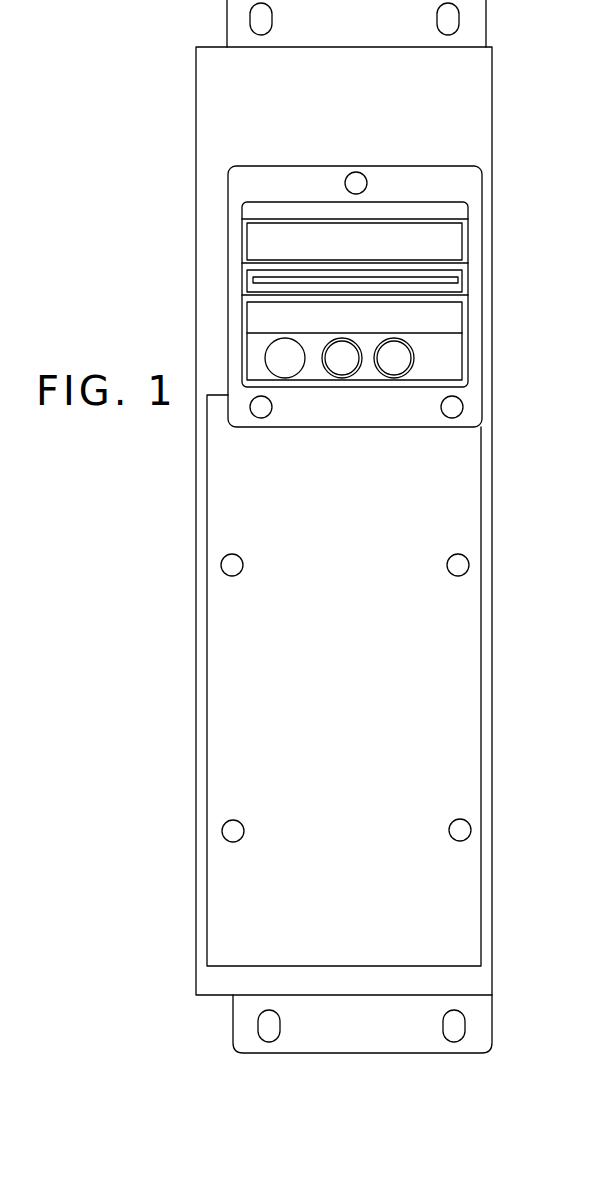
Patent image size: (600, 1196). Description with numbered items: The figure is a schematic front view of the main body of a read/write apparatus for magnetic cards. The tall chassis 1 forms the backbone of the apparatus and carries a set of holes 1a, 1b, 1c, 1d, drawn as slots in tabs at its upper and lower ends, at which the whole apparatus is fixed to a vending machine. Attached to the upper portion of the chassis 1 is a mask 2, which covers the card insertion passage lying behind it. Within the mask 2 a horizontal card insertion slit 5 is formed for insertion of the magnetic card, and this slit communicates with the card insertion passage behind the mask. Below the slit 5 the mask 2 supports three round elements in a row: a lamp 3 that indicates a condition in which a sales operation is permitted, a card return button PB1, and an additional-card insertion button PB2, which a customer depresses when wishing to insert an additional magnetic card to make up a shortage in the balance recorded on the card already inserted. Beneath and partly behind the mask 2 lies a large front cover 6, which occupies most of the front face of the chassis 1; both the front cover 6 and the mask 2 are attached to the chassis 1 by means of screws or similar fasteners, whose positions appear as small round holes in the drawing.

The chassis 1 is at (473, 76).
The hole 1a is at (259, 16).
The hole 1b is at (448, 16).
The hole 1c is at (268, 1030).
The hole 1d is at (455, 1025).
The mask 2 is at (474, 177).
The lamp 3 is at (277, 358).
The card insertion slit 5 is at (458, 274).
The front cover 6 is at (467, 539).
The card return button PB1 is at (404, 360).
The additional-card insertion button PB2 is at (360, 352).